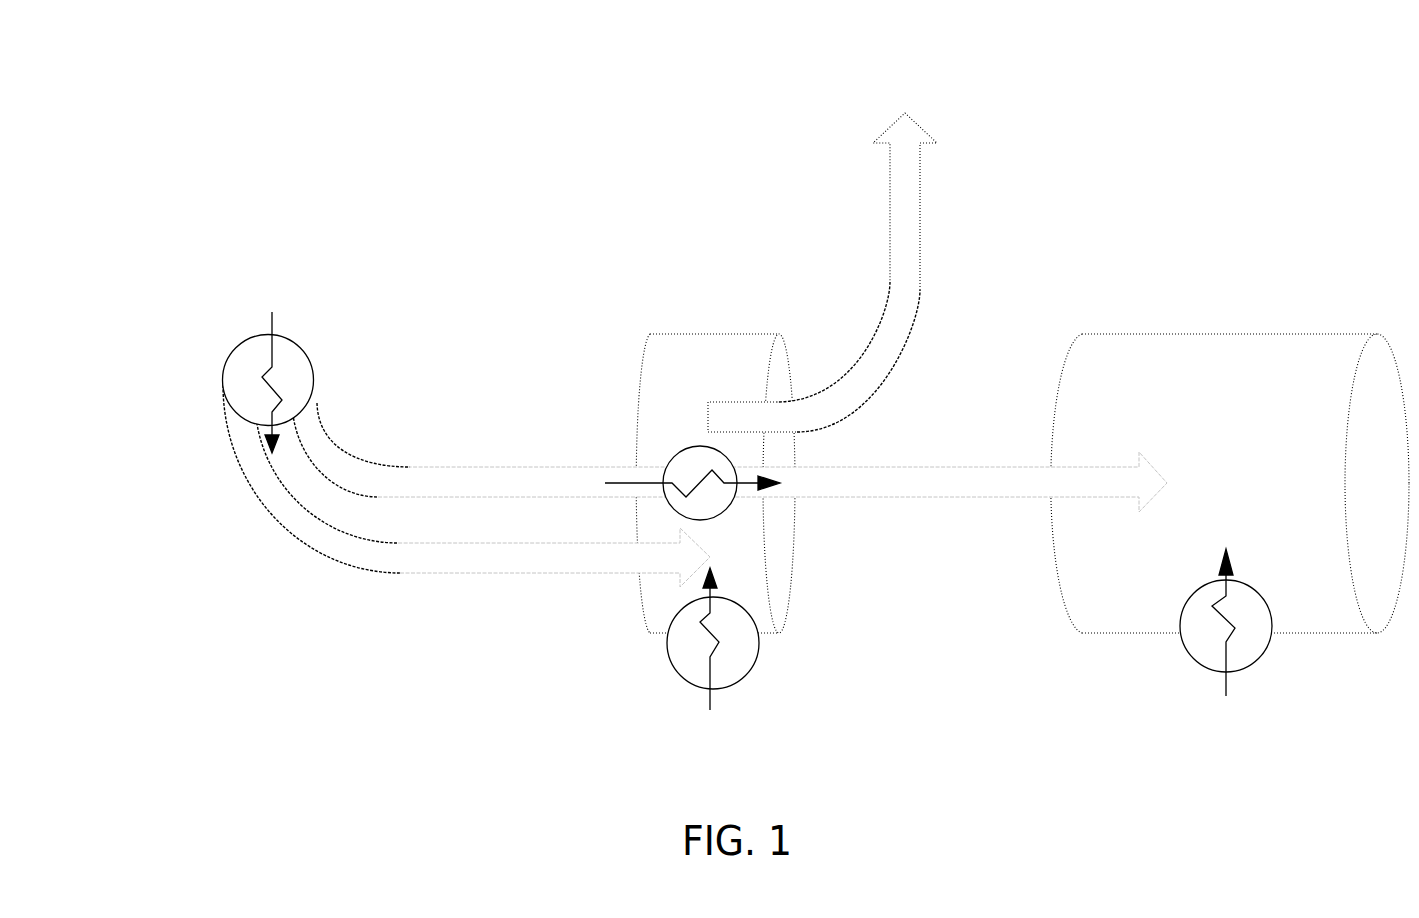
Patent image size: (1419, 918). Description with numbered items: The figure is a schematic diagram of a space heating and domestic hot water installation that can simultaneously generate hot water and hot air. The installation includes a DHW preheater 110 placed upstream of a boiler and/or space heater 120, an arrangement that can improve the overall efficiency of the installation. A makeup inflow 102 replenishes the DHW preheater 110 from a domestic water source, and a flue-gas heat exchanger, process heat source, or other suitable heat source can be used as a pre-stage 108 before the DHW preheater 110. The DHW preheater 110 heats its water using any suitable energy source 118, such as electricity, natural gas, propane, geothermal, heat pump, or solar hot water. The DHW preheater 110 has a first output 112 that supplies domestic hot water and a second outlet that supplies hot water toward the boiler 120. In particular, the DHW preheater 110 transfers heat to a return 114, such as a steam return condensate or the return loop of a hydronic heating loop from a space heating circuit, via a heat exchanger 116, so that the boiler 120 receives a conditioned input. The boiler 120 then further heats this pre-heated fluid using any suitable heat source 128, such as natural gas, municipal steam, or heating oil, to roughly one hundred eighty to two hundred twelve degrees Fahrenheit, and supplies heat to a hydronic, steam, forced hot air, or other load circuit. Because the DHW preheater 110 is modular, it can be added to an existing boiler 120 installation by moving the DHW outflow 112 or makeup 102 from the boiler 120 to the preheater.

The makeup inflow 102 is at (242, 472).
The pre-stage 108 is at (307, 357).
The DHW preheater 110 is at (715, 483).
The first output 112 is at (823, 248).
The return 114 is at (353, 457).
The heat exchanger 116 is at (678, 453).
The energy source 118 is at (745, 675).
The boiler and/or space heater 120 is at (1230, 483).
The heat source 128 is at (1255, 662).